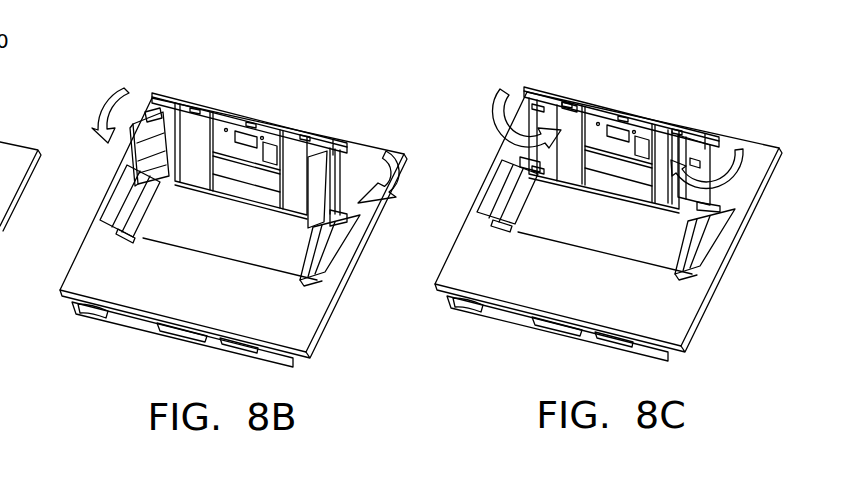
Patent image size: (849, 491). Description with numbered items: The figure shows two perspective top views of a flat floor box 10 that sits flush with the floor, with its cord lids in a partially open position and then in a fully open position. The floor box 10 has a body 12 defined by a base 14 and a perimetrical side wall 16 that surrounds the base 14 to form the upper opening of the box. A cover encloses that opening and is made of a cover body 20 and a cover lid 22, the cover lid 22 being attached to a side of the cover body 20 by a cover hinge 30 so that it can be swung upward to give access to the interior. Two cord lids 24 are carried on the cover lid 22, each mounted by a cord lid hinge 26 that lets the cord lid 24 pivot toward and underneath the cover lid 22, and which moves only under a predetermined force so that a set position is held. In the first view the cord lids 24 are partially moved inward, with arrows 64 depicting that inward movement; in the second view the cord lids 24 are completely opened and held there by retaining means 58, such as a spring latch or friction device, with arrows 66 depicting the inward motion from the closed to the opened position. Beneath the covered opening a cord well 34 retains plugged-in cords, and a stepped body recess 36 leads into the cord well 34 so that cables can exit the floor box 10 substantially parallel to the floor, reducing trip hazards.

In FIG. 8B, the floor box 10 is at (221, 209).
In FIG. 8C, the floor box 10 is at (635, 202).
In FIG. 8B, the body 12 is at (95, 315).
In FIG. 8B, the base 14 is at (228, 246).
In FIG. 8C, the base 14 is at (605, 241).
In FIG. 8C, the perimetrical side wall 16 is at (550, 331).
In FIG. 8B, the cover body 20 is at (193, 292).
In FIG. 8C, the cover body 20 is at (608, 236).
In FIG. 8B, the cover lid 22 is at (238, 113).
In FIG. 8B, the cord lid 24 is at (146, 113).
In FIG. 8C, the cord lid 24 is at (730, 153).
In FIG. 8C, the cord lid hinge 26 is at (676, 117).
In FIG. 8B, the cover hinge 30 is at (227, 193).
In FIG. 8C, the cover hinge 30 is at (761, 233).
In FIG. 8B, the cord well 34 is at (280, 258).
In FIG. 8C, the cord well 34 is at (733, 263).
In FIG. 8B, the body recess 36 is at (120, 197).
In FIG. 8C, the body recess 36 is at (488, 175).
In FIG. 8B, the retaining means 58 is at (163, 111).
In FIG. 8C, the retaining means 58 is at (601, 83).
In FIG. 8B, the arrows 64 is at (118, 86).
In FIG. 8C, the arrows 66 is at (657, 120).